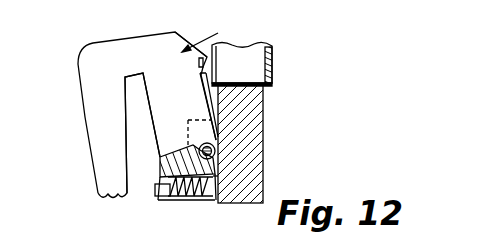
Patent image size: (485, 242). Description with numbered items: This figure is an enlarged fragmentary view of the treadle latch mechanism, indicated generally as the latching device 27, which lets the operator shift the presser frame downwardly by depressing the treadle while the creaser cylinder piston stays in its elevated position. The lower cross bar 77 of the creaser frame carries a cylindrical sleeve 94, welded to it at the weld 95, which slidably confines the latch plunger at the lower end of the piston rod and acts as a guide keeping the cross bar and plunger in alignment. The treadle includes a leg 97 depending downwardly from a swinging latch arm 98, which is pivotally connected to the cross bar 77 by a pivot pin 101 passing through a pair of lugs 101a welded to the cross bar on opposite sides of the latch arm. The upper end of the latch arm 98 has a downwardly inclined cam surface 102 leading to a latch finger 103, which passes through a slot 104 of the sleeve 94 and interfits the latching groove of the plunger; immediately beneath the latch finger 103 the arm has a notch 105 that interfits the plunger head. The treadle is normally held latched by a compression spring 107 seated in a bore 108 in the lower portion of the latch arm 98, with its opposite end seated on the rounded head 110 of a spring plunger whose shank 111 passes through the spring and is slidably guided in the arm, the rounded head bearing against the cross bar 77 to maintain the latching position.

The latching device 27 is at (218, 33).
The cross bar 77 is at (252, 120).
The cylindrical sleeve 94 is at (272, 63).
The weld 95 is at (265, 86).
The leg 97 is at (100, 152).
The latch arm 98 is at (168, 129).
The pivot pin 101 is at (212, 160).
The lugs 101a is at (239, 70).
The cam surface 102 is at (183, 54).
The latch finger 103 is at (199, 66).
The slot 104 is at (243, 43).
The notch 105 is at (200, 85).
The compression spring 107 is at (183, 205).
The bore 108 is at (196, 199).
The rounded head 110 is at (213, 180).
The shank 111 is at (158, 200).